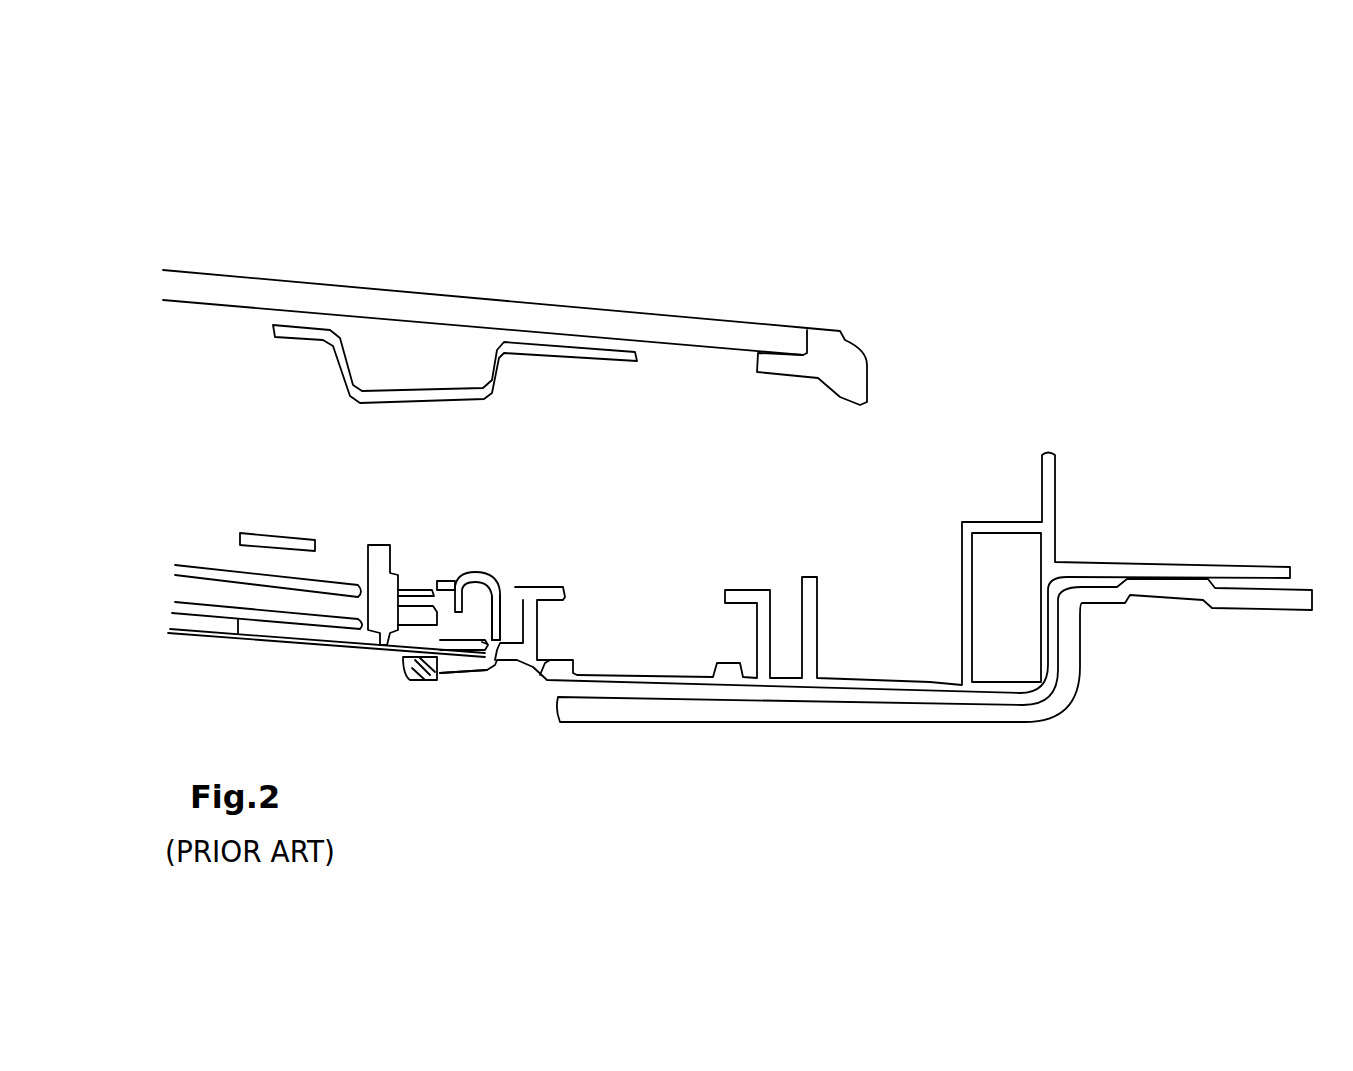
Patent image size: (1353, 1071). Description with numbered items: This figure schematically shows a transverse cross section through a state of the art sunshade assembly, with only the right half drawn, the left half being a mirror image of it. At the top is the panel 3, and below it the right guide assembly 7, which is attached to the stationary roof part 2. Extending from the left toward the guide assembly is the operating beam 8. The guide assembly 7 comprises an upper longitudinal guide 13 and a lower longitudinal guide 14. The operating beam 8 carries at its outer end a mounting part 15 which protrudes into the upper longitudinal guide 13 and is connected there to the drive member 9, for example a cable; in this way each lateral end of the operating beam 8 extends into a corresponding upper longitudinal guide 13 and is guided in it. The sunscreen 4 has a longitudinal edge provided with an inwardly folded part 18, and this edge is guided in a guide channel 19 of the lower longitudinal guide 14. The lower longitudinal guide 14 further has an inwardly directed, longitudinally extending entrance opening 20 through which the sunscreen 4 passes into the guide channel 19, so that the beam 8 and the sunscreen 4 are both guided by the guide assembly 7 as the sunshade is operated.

The stationary roof part 2 is at (1175, 592).
The panel 3 is at (518, 312).
The sunscreen 4 is at (200, 634).
The right guide assembly 7 is at (573, 602).
The operating beam 8 is at (199, 567).
The drive member 9 is at (472, 597).
The upper longitudinal guide 13 is at (488, 573).
The lower longitudinal guide 14 is at (480, 673).
The mounting part 15 is at (408, 590).
The inwardly folded part 18 is at (448, 648).
The guide channel 19 is at (482, 642).
The entrance opening 20 is at (423, 663).